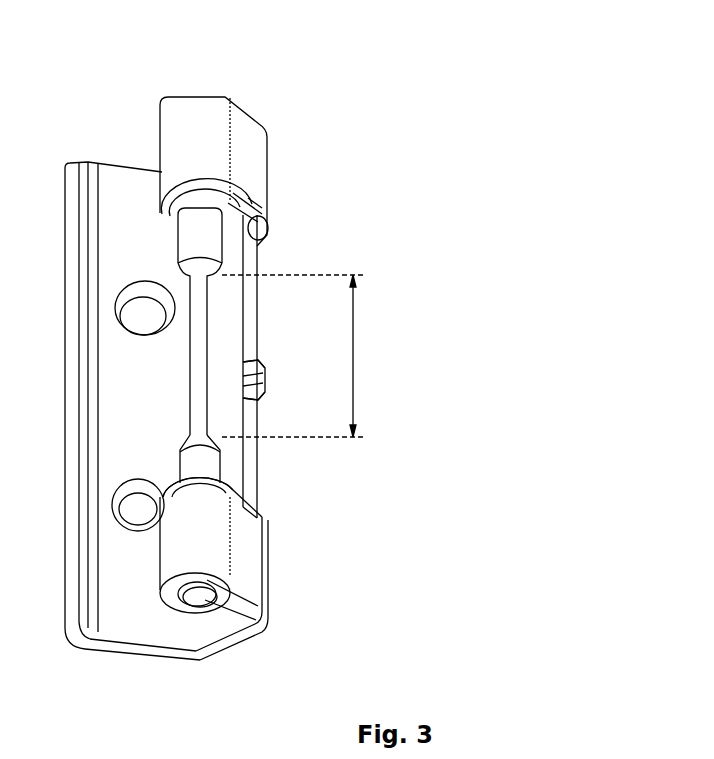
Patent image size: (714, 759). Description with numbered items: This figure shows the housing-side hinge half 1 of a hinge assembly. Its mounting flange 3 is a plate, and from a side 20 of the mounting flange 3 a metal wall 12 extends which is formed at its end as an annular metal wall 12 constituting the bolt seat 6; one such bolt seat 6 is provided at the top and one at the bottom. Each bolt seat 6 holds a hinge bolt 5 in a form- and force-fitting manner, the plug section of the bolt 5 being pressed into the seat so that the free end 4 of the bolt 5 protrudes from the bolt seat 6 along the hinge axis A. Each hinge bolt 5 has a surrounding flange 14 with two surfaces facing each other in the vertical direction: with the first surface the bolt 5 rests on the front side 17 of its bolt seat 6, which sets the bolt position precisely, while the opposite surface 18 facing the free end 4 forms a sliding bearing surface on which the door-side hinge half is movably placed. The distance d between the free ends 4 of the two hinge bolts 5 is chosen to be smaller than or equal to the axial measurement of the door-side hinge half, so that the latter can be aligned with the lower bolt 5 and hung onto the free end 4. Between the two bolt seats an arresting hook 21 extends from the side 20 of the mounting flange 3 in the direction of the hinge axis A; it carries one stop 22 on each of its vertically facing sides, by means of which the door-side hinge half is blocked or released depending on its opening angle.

The housing-side hinge half 1 is at (326, 68).
The mounting flange 3 is at (130, 630).
The free end 4 is at (222, 245).
The hinge bolt 5 is at (171, 250).
The bolt seat 6 is at (210, 124).
The metal wall 12 is at (238, 640).
The surrounding flange 14 is at (164, 206).
The front side of the bolt seat 17 is at (260, 201).
The sliding bearing surface 18 is at (266, 226).
The side of the mounting flange 20 is at (250, 295).
The arresting hook 21 is at (263, 376).
The stop 22 is at (262, 363).
The hinge axis A is at (200, 97).
The distance d is at (357, 355).